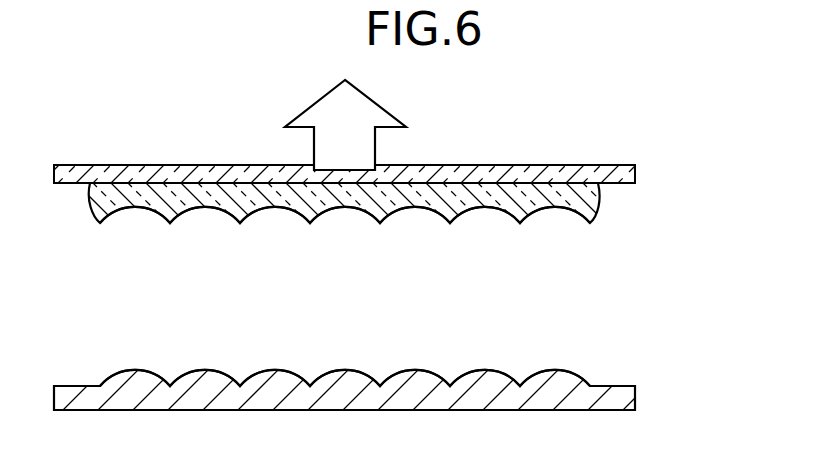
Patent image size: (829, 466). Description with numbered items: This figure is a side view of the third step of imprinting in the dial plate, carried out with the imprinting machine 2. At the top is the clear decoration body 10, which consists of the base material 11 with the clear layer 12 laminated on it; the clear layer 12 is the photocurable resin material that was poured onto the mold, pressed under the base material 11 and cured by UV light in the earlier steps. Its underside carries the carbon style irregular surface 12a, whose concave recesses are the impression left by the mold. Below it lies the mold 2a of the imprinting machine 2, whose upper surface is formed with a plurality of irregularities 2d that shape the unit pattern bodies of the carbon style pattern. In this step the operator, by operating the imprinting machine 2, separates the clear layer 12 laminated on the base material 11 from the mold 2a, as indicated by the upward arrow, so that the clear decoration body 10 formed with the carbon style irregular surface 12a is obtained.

The clear decoration body 10 is at (403, 215).
The base material 11 is at (637, 173).
The clear layer 12 is at (600, 204).
The carbon style irregular surface 12a is at (339, 207).
The imprinting machine 2 is at (390, 326).
The mold 2a is at (637, 397).
The irregularities 2d is at (413, 370).